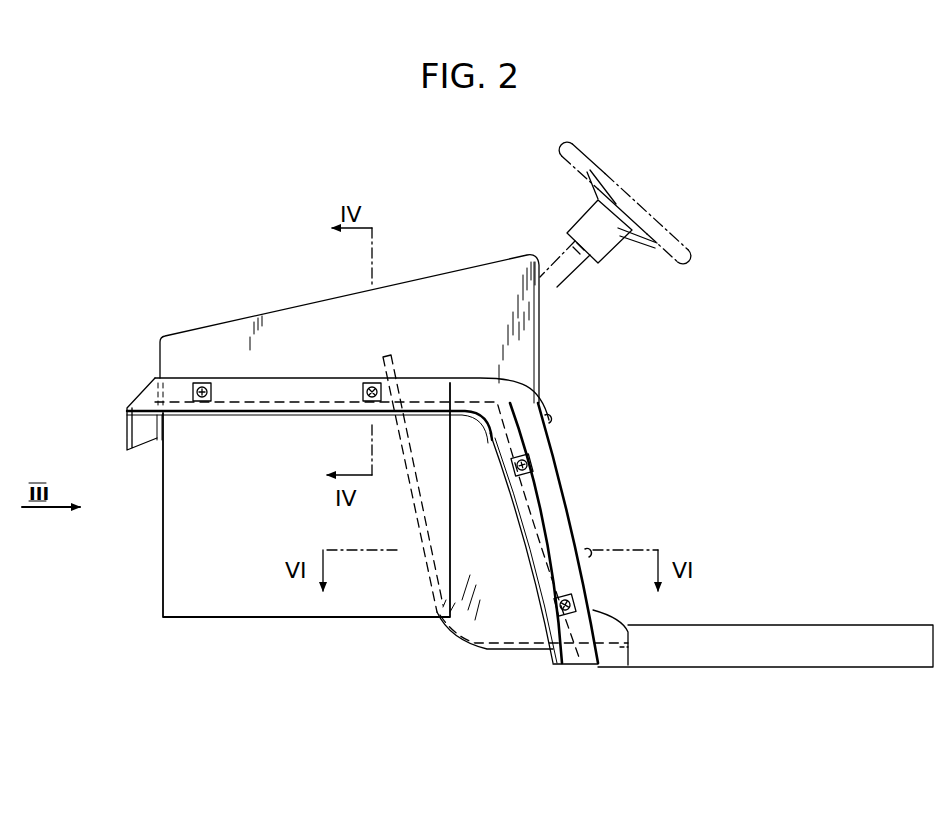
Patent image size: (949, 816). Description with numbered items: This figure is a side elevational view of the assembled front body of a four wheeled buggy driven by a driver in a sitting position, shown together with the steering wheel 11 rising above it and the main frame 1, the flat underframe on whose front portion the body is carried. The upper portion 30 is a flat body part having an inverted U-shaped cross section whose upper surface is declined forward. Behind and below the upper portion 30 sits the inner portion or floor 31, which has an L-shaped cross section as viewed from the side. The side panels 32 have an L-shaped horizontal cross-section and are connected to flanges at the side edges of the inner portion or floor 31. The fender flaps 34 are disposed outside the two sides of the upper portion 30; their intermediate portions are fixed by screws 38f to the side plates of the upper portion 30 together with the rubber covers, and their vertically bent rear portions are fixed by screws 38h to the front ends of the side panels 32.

The main frame 1 is at (702, 655).
The steering wheel 11 is at (665, 235).
The upper portion 30 is at (289, 300).
The inner portion or floor 31 is at (437, 621).
The side panels 32 is at (581, 508).
The fender flaps 34 is at (282, 420).
The screws 38f is at (205, 383).
The screws 38h is at (532, 462).